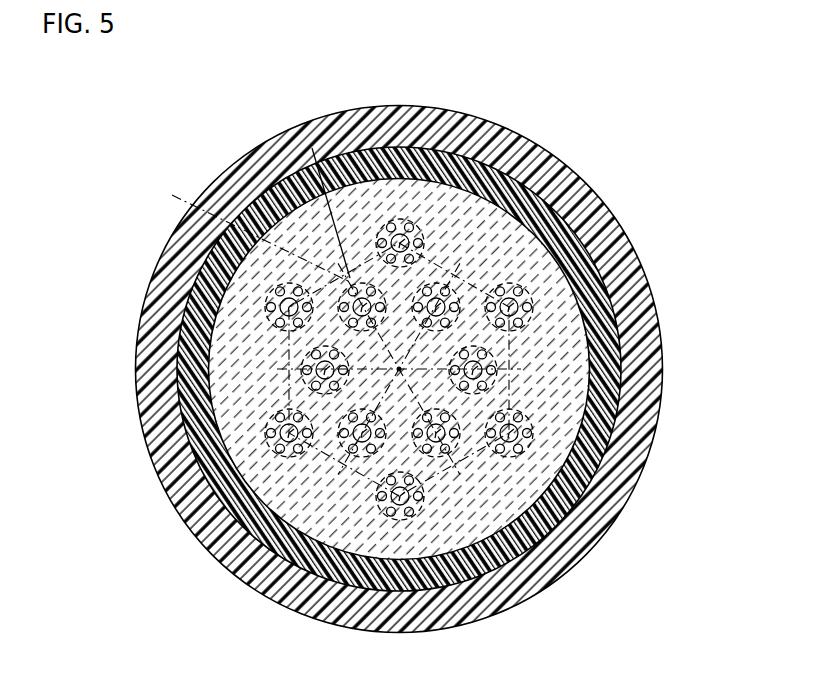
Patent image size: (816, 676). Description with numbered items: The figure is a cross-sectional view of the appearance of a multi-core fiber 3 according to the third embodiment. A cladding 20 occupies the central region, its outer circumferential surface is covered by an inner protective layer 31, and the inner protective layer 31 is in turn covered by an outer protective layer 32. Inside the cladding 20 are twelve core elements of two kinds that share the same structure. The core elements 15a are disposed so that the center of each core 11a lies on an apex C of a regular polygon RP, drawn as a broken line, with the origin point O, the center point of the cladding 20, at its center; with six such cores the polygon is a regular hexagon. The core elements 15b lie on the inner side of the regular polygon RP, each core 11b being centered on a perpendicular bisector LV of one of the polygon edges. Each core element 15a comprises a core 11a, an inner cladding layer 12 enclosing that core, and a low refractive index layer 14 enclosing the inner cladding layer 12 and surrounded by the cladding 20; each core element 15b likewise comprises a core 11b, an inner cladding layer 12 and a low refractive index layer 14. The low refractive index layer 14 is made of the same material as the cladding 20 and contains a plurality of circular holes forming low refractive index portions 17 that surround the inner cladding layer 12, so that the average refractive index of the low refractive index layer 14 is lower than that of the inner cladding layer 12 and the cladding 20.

The multi-core fiber 3 is at (682, 100).
The core 11a is at (403, 237).
The core 11b is at (483, 378).
The inner cladding layer 12 is at (393, 224).
The low refractive index layer 14 is at (386, 227).
The core element 15a is at (400, 219).
The core element 15b is at (353, 283).
The low refractive index portion 17 is at (432, 203).
The cladding 20 is at (548, 200).
The inner protective layer 31 is at (637, 367).
The outer protective layer 32 is at (655, 339).
The apex C is at (643, 480).
The origin point O is at (520, 297).
The regular polygon RP is at (307, 184).
The perpendicular bisector LV is at (251, 229).